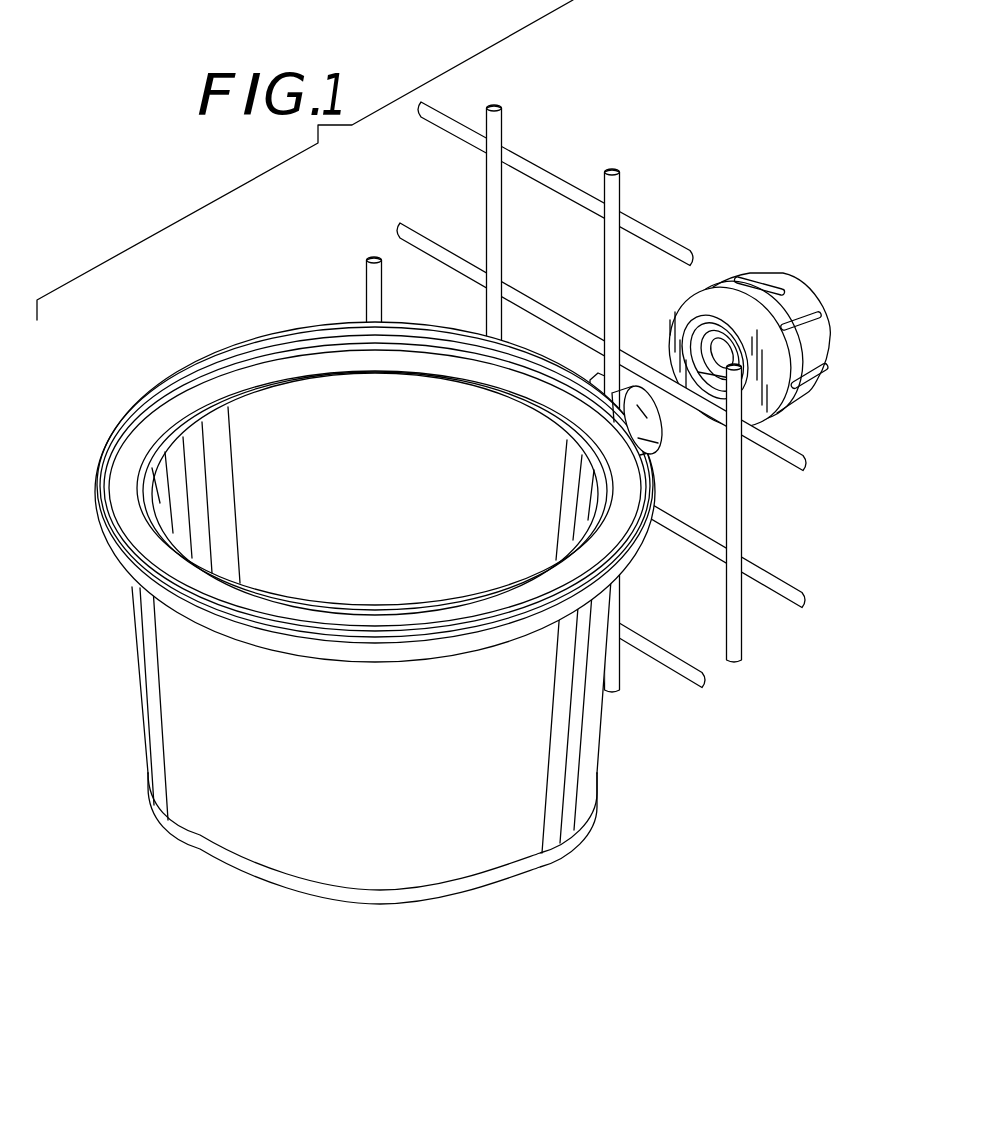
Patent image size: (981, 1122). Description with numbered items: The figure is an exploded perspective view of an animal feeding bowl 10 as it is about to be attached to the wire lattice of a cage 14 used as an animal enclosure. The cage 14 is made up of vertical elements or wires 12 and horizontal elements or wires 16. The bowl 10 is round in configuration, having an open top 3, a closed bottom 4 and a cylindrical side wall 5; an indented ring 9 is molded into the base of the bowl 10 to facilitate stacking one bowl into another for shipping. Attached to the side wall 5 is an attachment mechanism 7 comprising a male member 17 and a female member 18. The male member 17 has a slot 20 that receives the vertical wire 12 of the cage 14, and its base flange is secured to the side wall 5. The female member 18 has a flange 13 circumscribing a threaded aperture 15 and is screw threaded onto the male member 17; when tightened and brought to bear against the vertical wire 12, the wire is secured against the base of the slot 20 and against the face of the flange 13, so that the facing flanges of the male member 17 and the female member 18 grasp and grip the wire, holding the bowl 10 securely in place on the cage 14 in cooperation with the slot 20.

The open top 3 is at (360, 392).
The closed bottom 4 is at (240, 880).
The cylindrical side wall 5 is at (505, 748).
The attachment mechanism 7 is at (766, 337).
The indented ring 9 is at (190, 842).
The animal feeding bowl 10 is at (391, 602).
The vertical element 12 is at (618, 263).
The flange 13 is at (690, 305).
The cage 14 is at (587, 397).
The threaded aperture 15 is at (723, 352).
The horizontal element 16 is at (522, 152).
The male member 17 is at (661, 440).
The female member 18 is at (810, 292).
The slot 20 is at (621, 370).